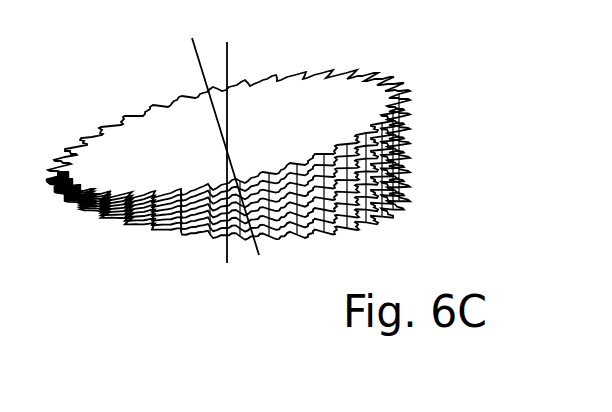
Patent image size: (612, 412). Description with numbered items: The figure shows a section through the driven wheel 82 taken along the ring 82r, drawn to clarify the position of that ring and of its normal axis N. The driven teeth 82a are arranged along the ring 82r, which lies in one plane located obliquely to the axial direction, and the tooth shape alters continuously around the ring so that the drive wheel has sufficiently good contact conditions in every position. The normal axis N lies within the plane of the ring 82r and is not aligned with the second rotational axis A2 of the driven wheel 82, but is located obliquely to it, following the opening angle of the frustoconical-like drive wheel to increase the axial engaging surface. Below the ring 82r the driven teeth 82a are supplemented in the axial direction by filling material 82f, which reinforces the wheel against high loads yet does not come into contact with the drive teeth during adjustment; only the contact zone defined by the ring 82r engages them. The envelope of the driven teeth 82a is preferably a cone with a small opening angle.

The driven wheel 82 is at (274, 178).
The driven teeth 82a is at (403, 93).
The filling material 82f is at (403, 175).
The ring 82r is at (180, 193).
The normal axis N is at (195, 52).
The second rotational axis A2 is at (227, 63).